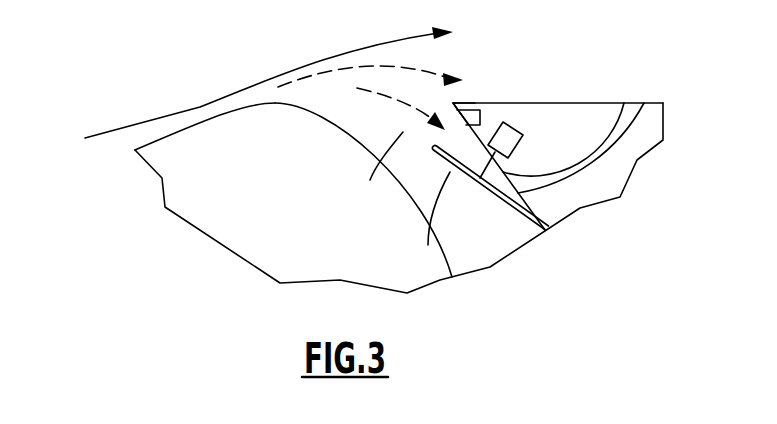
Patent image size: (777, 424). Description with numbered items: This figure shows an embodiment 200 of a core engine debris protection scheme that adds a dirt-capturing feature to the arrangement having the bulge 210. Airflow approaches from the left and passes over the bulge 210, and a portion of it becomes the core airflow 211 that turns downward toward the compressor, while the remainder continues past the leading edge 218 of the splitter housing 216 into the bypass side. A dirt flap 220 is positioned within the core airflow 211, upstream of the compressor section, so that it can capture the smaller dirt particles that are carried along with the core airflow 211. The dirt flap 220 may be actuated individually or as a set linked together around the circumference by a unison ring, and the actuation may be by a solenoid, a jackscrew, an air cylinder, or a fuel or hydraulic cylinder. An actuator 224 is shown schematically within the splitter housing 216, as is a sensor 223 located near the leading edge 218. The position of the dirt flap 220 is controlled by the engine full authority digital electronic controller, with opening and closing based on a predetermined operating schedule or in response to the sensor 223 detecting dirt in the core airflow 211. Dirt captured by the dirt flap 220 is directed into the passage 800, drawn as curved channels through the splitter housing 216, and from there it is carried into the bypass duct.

The embodiment 200 is at (127, 60).
The bulge 210 is at (273, 104).
The core airflow 211 is at (370, 180).
The splitter housing 216 is at (543, 103).
The leading edge 218 is at (455, 102).
The dirt flap 220 is at (427, 243).
The sensor 223 is at (473, 120).
The actuator 224 is at (521, 139).
The passage 800 is at (634, 115).